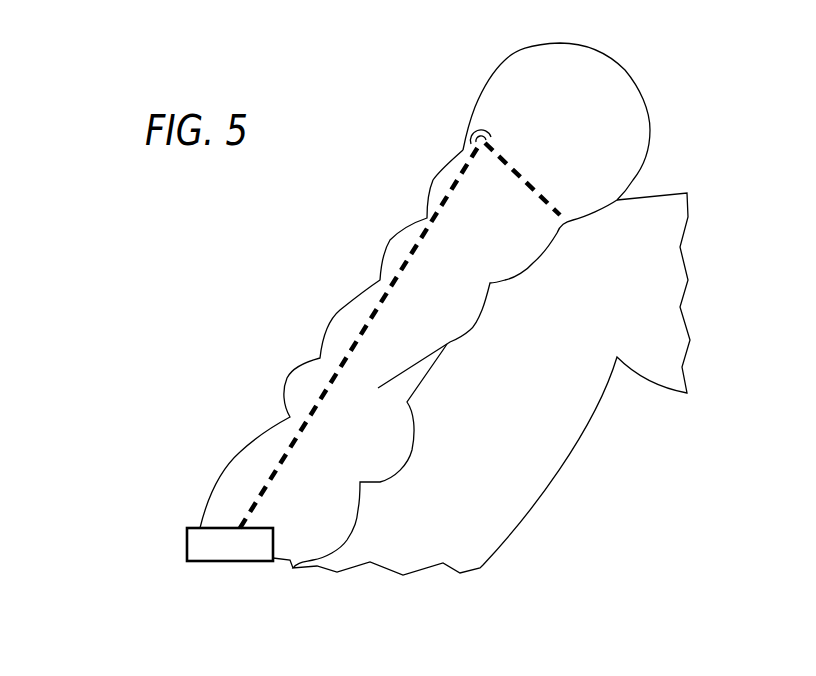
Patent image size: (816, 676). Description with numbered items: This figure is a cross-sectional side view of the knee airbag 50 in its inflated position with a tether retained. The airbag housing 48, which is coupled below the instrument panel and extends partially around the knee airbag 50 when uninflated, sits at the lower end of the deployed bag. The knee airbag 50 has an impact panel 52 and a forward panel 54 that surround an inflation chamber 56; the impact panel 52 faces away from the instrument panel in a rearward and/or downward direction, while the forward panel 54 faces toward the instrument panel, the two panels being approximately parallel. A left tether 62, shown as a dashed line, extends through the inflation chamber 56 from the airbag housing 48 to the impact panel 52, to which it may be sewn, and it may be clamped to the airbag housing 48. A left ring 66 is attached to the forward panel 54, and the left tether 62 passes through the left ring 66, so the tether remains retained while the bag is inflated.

The airbag housing 48 is at (187, 544).
The knee airbag 50 is at (633, 75).
The impact panel 52 is at (523, 270).
The forward panel 54 is at (392, 240).
The inflation chamber 56 is at (312, 513).
The left tether 62 is at (343, 348).
The left ring 66 is at (489, 134).